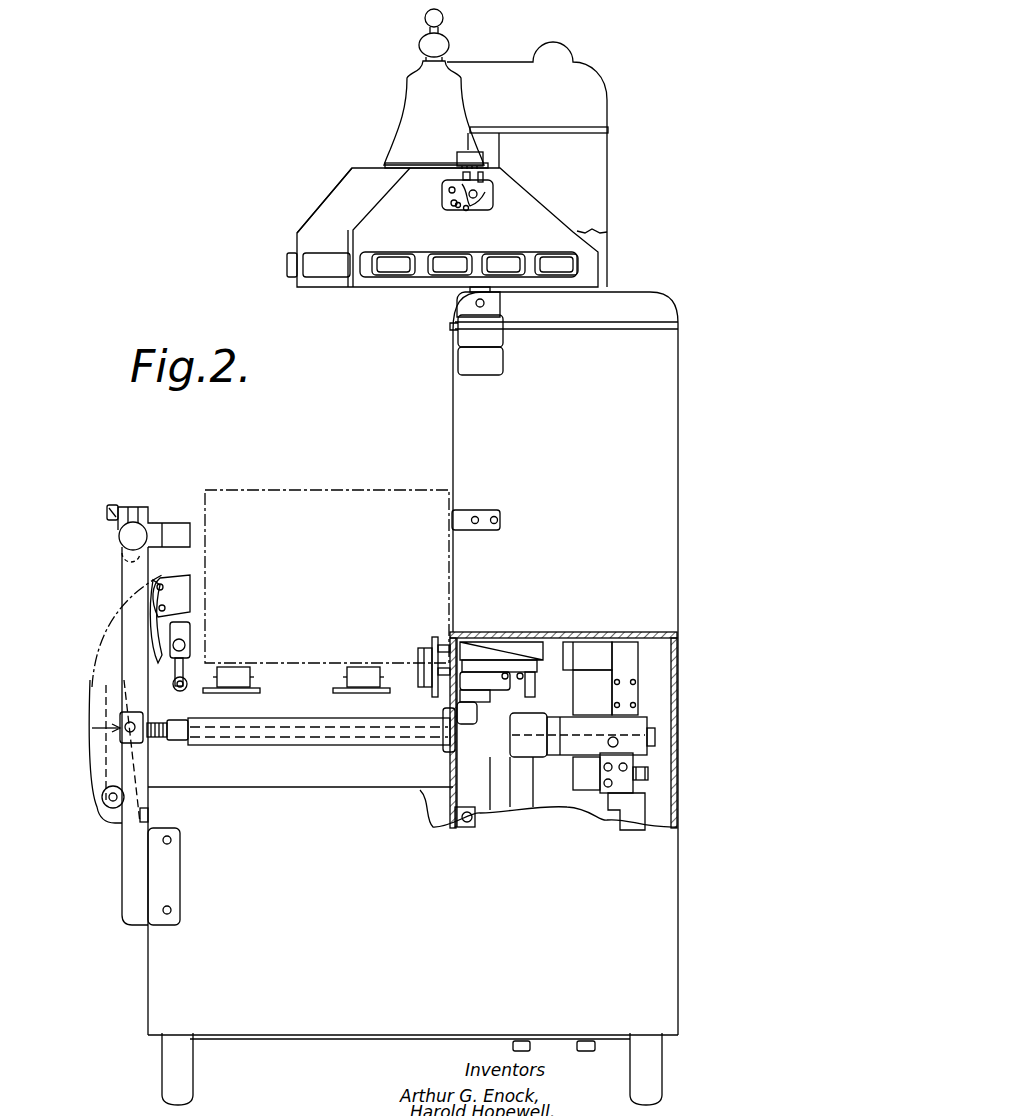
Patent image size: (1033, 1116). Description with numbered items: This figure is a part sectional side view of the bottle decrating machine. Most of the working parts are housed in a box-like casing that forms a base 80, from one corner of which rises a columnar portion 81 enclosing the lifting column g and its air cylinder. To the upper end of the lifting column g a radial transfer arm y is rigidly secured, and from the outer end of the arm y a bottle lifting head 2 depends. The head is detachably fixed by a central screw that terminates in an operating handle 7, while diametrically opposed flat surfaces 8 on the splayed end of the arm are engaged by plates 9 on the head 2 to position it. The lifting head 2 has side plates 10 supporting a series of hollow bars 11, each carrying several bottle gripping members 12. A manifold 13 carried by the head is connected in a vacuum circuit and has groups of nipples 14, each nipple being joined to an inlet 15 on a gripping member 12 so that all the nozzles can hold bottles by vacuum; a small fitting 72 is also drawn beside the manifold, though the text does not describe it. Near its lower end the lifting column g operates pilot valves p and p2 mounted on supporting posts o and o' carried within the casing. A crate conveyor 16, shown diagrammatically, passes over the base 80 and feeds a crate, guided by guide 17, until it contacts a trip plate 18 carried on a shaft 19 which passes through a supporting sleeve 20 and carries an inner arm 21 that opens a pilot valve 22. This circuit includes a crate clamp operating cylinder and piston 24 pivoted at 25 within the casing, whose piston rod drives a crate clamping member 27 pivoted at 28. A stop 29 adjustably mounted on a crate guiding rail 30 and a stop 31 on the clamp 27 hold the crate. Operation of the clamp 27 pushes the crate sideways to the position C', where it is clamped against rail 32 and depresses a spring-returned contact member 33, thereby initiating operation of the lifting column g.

The operating handle 7 is at (425, 35).
The radial transfer arm y is at (476, 78).
The lifting column g is at (590, 157).
The flat surfaces 8 is at (387, 155).
The plates 9 is at (470, 155).
The bottle lifting head 2 is at (368, 193).
The side plates 10 is at (313, 235).
The manifold 13 is at (445, 198).
The switch contacts 72 is at (483, 180).
The nipples 14 is at (462, 210).
The hollow bars 11 is at (450, 265).
The inlet 15 is at (475, 303).
The bottle gripping members 12 is at (455, 362).
The columnar portion 81 is at (580, 460).
The clamped crate position C' is at (327, 551).
The rail 32 is at (463, 582).
The crate guiding rail 30 is at (130, 528).
The stop 29 is at (180, 530).
The crate clamping member 27 is at (107, 768).
The stop 31 is at (178, 592).
The trip plate 18 is at (188, 632).
The crate conveyor 16 is at (353, 672).
The guide 17 is at (425, 655).
The contact member 33 is at (443, 637).
The shaft 19 is at (237, 730).
The supporting sleeve 20 is at (367, 747).
The pivot 28 is at (142, 807).
The pilot valve 22 is at (475, 702).
The arm 21 is at (452, 757).
The base 80 is at (390, 932).
The pilot valve p2 is at (488, 645).
The supporting post o is at (587, 650).
The pilot valve p is at (623, 660).
The supporting post o' is at (510, 805).
The pivot 25 is at (613, 744).
The crate clamp operating cylinder and piston 24 is at (635, 742).